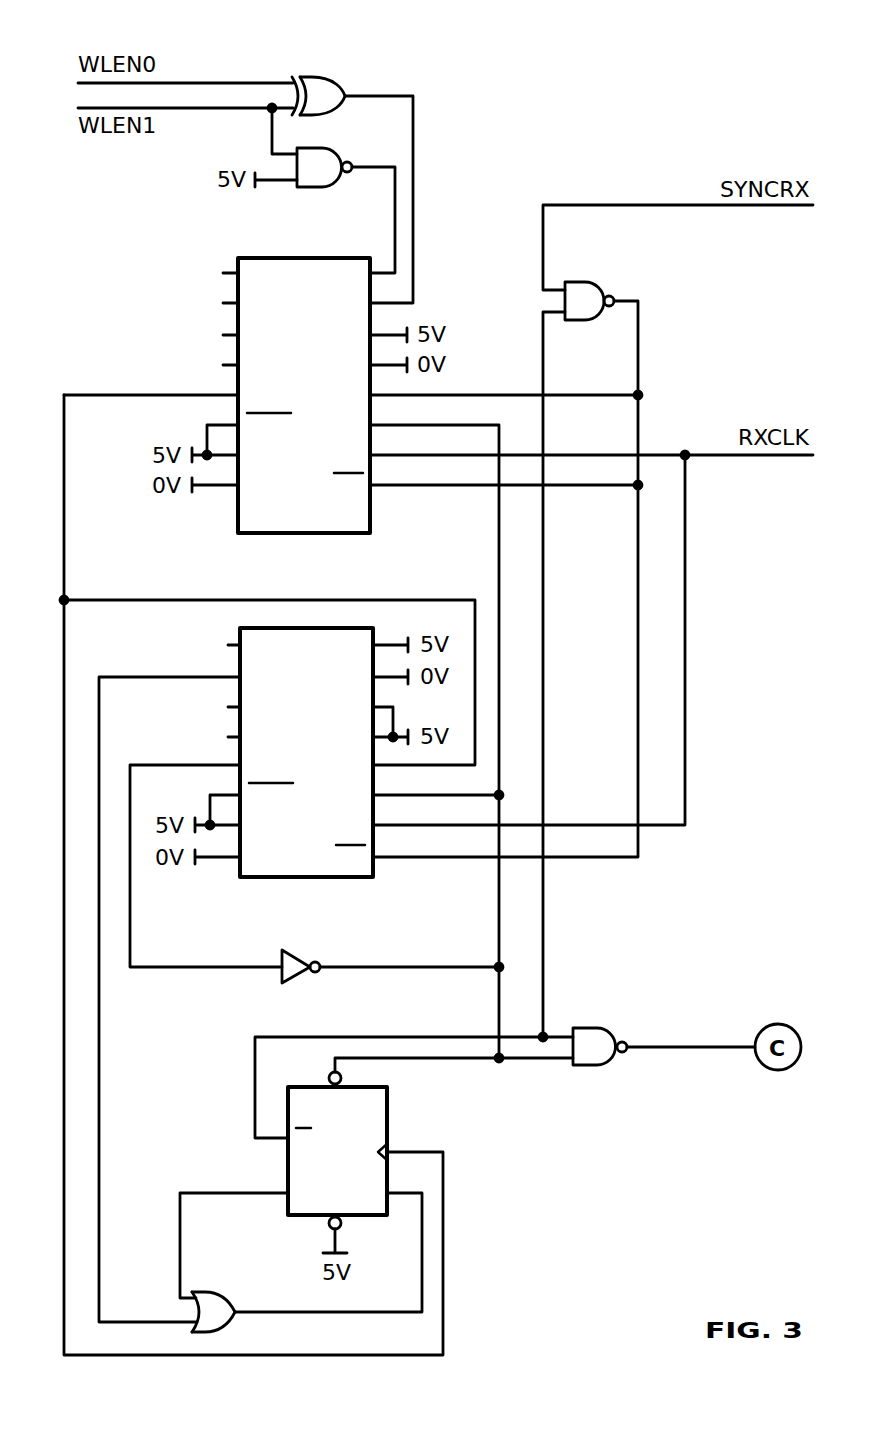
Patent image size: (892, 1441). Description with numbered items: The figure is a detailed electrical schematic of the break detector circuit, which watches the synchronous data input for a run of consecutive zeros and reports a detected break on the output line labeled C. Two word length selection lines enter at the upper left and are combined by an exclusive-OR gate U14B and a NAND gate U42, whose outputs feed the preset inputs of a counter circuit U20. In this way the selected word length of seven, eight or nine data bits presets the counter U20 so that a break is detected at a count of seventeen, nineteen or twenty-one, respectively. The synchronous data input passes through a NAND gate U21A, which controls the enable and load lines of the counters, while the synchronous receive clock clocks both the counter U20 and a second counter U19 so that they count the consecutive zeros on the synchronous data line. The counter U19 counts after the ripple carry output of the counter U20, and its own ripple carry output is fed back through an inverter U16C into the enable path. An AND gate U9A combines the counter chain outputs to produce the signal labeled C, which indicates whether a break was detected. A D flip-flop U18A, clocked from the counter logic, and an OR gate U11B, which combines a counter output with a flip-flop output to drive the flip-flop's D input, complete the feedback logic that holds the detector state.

The XOR gate U14B is at (340, 61).
The NAND gate U42 is at (320, 172).
The counter circuit U20 is at (296, 415).
The NAND gate U21A is at (607, 305).
The counter U19 is at (304, 772).
The inverter U16C is at (300, 977).
The AND gate U9A is at (623, 1049).
The D flip-flop U18A is at (397, 1150).
The OR gate U11B is at (265, 1302).